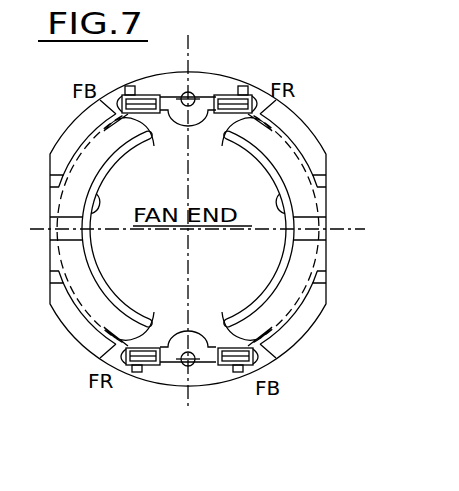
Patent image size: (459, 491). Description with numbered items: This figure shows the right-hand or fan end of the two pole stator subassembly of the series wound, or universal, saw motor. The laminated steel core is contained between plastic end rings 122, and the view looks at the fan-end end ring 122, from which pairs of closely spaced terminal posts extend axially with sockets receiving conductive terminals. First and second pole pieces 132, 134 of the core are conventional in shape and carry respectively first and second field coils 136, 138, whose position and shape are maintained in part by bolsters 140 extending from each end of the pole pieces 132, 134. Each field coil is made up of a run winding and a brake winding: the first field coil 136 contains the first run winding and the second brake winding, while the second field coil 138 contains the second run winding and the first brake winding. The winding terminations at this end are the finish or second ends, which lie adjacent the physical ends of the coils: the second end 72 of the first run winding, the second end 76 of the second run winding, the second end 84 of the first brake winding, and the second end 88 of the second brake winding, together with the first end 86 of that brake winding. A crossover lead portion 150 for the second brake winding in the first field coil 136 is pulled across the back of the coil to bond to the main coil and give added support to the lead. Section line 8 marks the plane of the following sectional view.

The section line 8- 8 is at (368, 432).
The second end of first run winding 72 is at (262, 73).
The second end of second run winding 76 is at (139, 395).
The second end of first brake field winding 84 is at (137, 72).
The first end of second brake field winding 86 is at (188, 171).
The second end of second brake field winding 88 is at (247, 397).
The end ring 122 is at (206, 73).
The first pole piece 132 is at (275, 202).
The second pole piece 134 is at (96, 189).
The first field coil 136 is at (278, 153).
The second field coil 138 is at (138, 145).
The bolster 140 is at (141, 294).
The crossover lead portion 150 is at (313, 290).